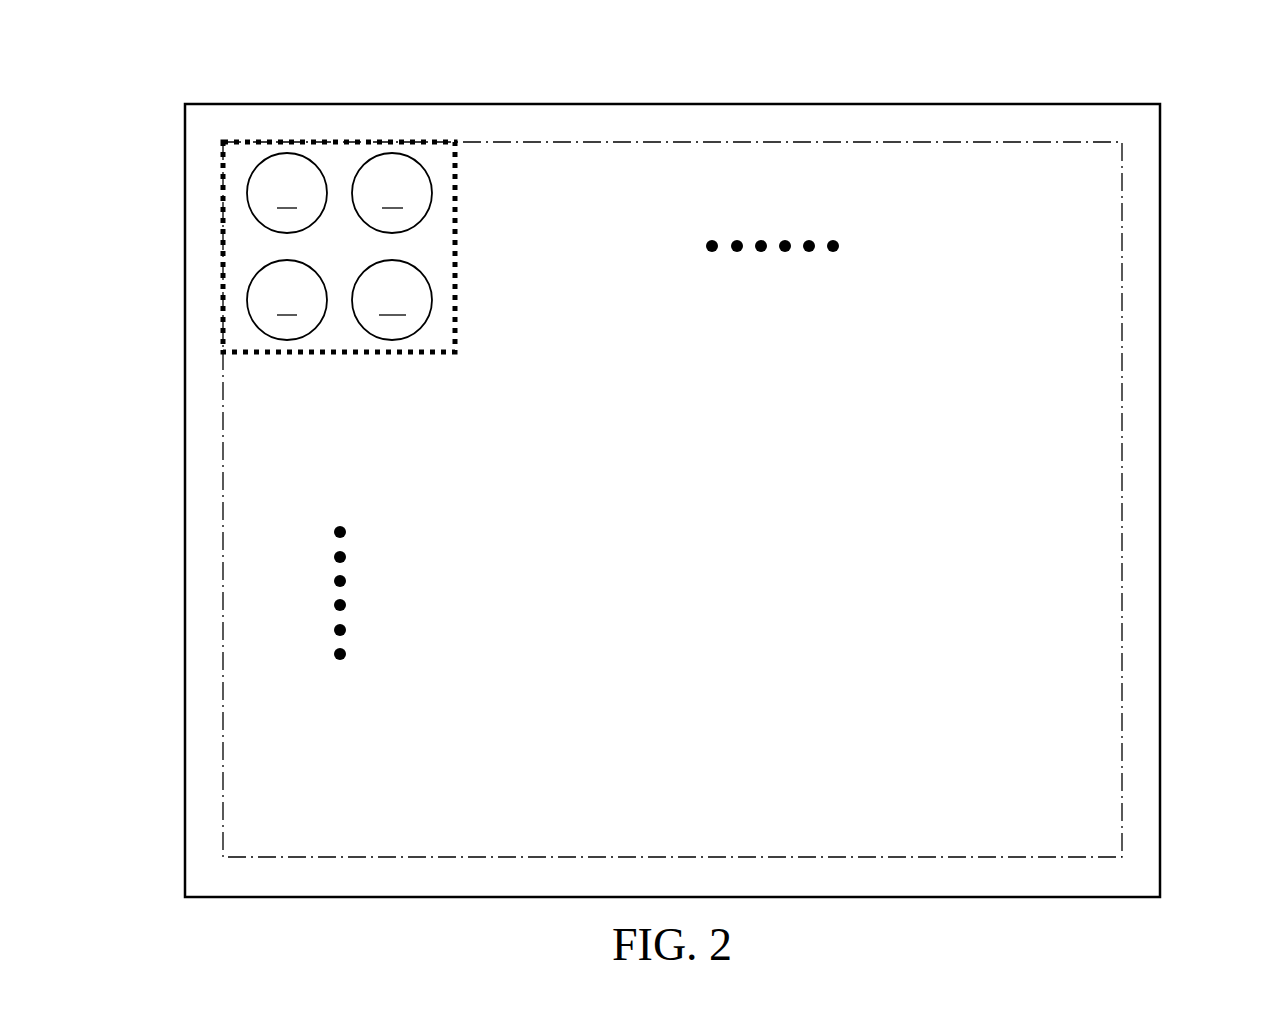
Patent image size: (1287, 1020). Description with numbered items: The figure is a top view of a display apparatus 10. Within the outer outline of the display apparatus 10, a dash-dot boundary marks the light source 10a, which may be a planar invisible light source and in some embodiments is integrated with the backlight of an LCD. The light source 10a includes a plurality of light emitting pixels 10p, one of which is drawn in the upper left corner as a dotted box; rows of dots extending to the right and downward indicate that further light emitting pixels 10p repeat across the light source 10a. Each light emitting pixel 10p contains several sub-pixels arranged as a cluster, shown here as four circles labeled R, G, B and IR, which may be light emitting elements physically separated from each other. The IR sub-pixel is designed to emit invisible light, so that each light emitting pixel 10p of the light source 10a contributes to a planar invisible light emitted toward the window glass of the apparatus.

The display apparatus 10 is at (145, 505).
The light source 10a is at (1122, 489).
The light emitting pixel 10p is at (456, 182).